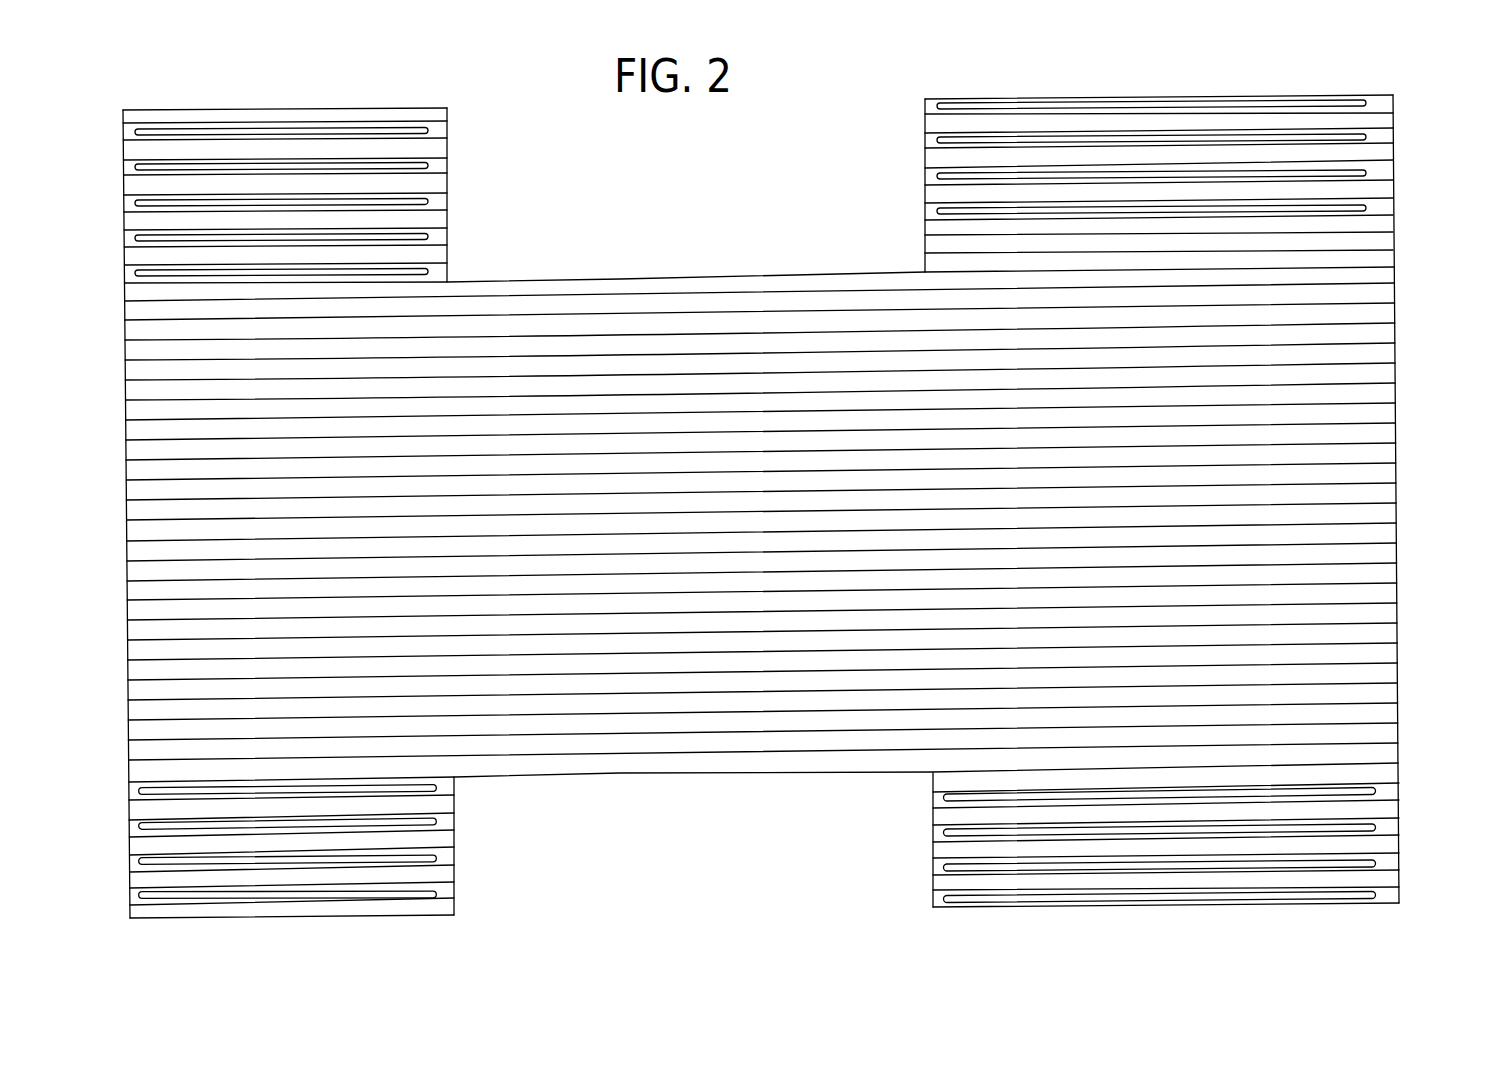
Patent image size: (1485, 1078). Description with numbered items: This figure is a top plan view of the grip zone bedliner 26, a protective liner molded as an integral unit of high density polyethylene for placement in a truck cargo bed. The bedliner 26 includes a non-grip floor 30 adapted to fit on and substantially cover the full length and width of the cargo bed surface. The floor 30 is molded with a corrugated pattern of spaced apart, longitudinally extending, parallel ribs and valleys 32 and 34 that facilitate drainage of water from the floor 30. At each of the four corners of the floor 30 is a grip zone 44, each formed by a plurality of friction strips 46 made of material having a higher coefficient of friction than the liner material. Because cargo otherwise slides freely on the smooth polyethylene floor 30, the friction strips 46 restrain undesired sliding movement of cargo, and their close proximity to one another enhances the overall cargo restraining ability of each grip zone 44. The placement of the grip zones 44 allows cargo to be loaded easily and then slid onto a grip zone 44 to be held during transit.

The bedliner 26 is at (356, 100).
The non-grip floor 30 is at (585, 321).
The ribs 32 is at (1382, 170).
The valleys 34 is at (1378, 118).
The grip zone 44 is at (452, 180).
The friction strips 46 is at (228, 271).